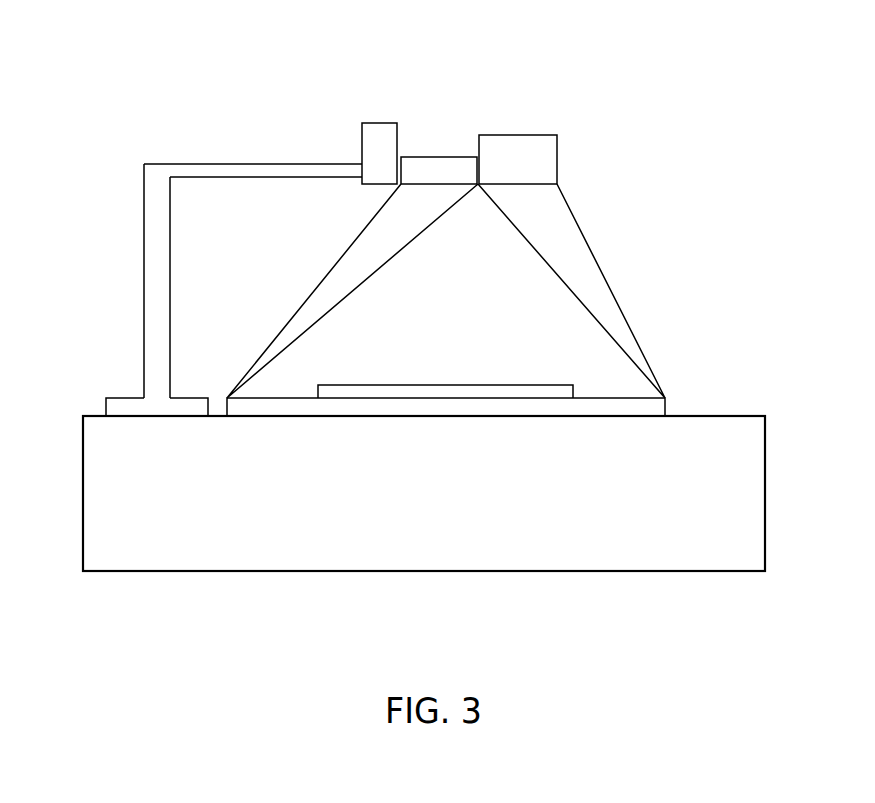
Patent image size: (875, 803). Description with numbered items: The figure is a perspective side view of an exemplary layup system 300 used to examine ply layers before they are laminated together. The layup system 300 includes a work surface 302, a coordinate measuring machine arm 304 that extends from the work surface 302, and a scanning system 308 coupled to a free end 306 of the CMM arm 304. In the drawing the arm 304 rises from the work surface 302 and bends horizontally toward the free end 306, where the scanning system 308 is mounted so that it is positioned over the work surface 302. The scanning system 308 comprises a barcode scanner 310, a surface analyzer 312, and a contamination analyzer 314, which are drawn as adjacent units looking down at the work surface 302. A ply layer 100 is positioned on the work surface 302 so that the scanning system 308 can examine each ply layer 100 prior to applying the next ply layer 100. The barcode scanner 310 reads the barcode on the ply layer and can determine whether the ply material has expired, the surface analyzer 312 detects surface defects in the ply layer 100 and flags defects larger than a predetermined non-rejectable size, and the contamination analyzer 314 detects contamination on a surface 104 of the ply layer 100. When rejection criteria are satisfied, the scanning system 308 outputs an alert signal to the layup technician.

The layup system 300 is at (740, 122).
The work surface 302 is at (745, 416).
The coordinate measuring machine (CMM) arm 304 is at (144, 303).
The free end 306 is at (356, 156).
The scanning system 308 is at (367, 117).
The contamination analyzer 314 is at (388, 130).
The surface analyzer 312 is at (445, 165).
The barcode scanner 310 is at (525, 143).
The ply layer 100 is at (577, 350).
The surface 104 is at (517, 383).